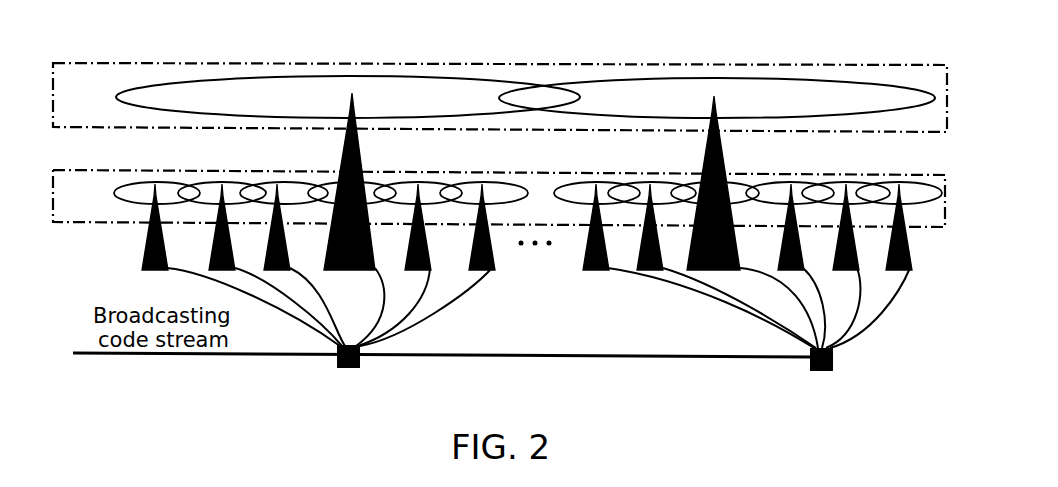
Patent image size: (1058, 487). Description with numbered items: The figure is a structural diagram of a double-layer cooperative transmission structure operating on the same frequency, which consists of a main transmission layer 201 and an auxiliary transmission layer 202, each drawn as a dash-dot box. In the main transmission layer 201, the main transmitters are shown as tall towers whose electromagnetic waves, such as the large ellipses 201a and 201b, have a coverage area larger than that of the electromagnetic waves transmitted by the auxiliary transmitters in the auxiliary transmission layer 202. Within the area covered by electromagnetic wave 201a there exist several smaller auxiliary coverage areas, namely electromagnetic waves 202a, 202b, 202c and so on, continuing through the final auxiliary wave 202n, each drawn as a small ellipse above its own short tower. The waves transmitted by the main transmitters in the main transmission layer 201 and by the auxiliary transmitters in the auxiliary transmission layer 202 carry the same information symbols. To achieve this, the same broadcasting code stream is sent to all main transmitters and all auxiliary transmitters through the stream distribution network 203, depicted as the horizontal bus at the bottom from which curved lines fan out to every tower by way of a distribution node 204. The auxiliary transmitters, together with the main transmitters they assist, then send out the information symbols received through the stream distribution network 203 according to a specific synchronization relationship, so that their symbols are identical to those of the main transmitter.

The main transmission layer 201 is at (100, 63).
The electromagnetic wave transmitted by the main transmitter 201a is at (407, 76).
The electromagnetic wave transmitted by the main transmitter 201b is at (690, 76).
The auxiliary transmission layer 202 is at (84, 170).
The electromagnetic wave transmitted by the auxiliary transmitter 202a is at (170, 183).
The electromagnetic wave transmitted by the auxiliary transmitter 202b is at (235, 183).
The electromagnetic wave transmitted by the auxiliary transmitter 202c is at (292, 183).
The small cell 202n is at (935, 182).
The stream distribution network 203 is at (490, 354).
The distribution node 204 is at (833, 368).